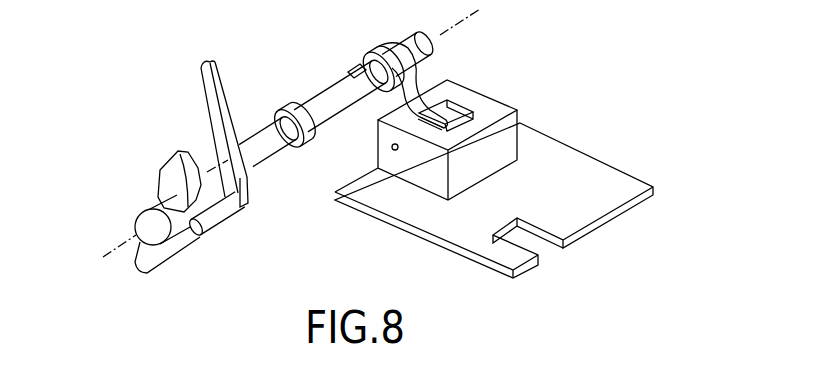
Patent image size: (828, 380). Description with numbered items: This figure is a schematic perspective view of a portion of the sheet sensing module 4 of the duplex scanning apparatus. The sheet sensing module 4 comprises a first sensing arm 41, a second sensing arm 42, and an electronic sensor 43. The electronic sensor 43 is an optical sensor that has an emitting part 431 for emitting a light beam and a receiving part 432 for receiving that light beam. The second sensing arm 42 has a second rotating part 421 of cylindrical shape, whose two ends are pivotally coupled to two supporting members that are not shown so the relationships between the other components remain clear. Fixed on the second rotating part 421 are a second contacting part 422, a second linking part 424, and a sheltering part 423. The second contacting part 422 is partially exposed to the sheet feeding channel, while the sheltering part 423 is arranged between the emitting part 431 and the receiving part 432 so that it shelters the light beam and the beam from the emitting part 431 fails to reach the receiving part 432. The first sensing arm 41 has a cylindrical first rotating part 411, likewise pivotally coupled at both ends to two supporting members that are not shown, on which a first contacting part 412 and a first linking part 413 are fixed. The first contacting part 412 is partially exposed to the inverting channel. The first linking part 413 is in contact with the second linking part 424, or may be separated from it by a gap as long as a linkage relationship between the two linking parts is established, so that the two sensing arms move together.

The sheet sensing module 4 is at (573, 46).
The first sensing arm 41 is at (159, 227).
The first rotating part 411 is at (147, 220).
The first contacting part 412 is at (153, 258).
The first linking part 413 is at (172, 177).
The second sensing arm 42 is at (287, 149).
The second rotating part 421 is at (323, 97).
The second contacting part 422 is at (205, 86).
The sheltering part 423 is at (465, 118).
The second linking part 424 is at (220, 212).
The electronic sensor 43 is at (472, 129).
The emitting part 431 is at (415, 125).
The receiving part 432 is at (442, 100).